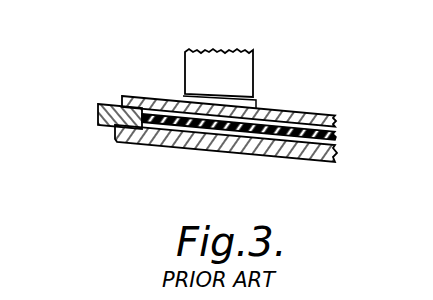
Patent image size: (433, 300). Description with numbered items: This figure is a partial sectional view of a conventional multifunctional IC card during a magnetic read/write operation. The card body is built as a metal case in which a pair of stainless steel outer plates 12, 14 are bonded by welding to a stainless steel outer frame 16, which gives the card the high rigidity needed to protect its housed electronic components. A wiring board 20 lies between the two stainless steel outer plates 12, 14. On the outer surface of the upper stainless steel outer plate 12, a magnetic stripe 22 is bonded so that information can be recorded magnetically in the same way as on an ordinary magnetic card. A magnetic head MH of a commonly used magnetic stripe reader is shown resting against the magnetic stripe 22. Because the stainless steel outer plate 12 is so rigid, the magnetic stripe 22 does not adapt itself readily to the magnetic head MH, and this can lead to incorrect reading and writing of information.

The stainless steel outer plate 12 is at (146, 99).
The stainless steel outer plate 14 is at (228, 152).
The stainless steel outer frame 16 is at (98, 119).
The wiring board 20 is at (273, 137).
The magnetic stripe 22 is at (248, 103).
The magnetic head MH is at (235, 70).